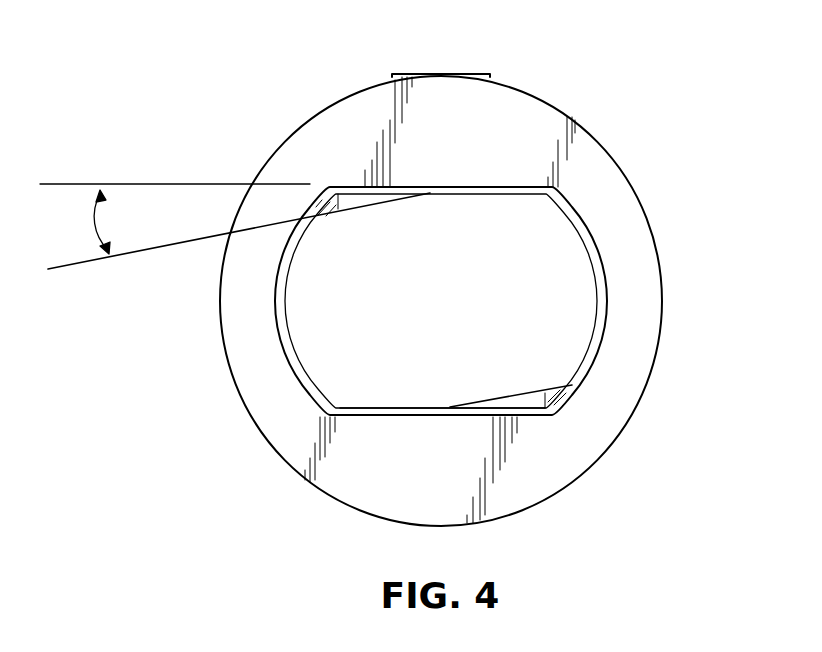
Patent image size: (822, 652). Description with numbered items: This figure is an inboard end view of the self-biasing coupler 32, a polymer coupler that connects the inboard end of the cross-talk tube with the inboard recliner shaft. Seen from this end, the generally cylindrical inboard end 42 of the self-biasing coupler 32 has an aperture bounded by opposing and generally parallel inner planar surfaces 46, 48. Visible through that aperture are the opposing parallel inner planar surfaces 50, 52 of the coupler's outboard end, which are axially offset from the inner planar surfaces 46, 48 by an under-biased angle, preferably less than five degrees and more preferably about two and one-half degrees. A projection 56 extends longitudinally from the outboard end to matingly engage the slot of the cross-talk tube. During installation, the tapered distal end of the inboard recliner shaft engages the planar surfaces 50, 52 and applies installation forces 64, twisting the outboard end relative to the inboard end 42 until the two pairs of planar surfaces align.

The self-biasing coupler 32 is at (403, 267).
The inboard end 42 is at (538, 116).
The inner planar surface 46 is at (494, 195).
The inner planar surface 48 is at (371, 407).
The inner planar surface 50 is at (390, 198).
The inner planar surface 52 is at (492, 397).
The projection 56 is at (485, 73).
The installation forces 64 is at (357, 212).